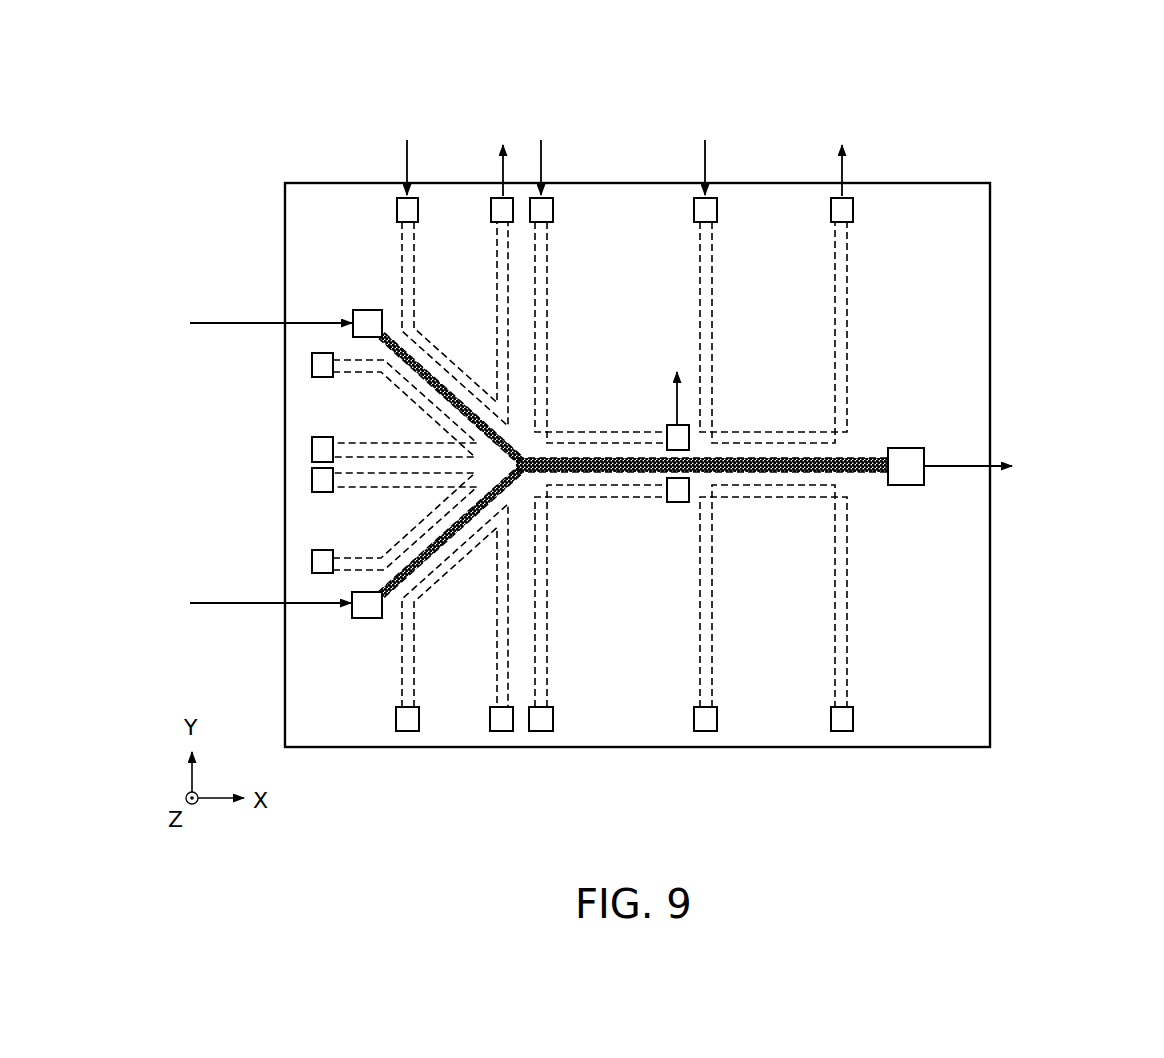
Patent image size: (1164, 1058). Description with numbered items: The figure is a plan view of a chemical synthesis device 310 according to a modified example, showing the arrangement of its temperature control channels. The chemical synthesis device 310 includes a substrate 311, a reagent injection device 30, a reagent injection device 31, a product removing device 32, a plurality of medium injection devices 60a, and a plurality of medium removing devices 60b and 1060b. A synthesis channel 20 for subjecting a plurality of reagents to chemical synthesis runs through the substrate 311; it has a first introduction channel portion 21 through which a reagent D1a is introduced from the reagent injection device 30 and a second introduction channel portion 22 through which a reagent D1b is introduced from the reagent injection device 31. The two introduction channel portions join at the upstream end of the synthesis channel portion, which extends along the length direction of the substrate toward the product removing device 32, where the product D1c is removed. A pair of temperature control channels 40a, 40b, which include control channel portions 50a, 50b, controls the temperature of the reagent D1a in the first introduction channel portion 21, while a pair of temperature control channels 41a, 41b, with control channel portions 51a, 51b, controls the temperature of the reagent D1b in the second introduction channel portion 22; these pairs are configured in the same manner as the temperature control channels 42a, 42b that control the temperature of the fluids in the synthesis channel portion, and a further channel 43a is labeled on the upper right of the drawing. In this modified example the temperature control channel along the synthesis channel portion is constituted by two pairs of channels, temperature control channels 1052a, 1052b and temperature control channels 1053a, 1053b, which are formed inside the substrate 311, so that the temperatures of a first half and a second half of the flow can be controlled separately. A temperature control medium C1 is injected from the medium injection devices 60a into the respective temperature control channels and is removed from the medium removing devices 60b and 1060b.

The chemical synthesis device 310 is at (1074, 121).
The substrate 311 is at (972, 181).
The synthesis channel 20 is at (798, 478).
The first introduction channel portion 21 is at (394, 338).
The second introduction channel portion 22 is at (398, 604).
The reagent injection device 30 is at (367, 322).
The reagent injection device 31 is at (367, 620).
The product removing device 32 is at (910, 458).
The temperature control channel 40a is at (395, 270).
The temperature control channel 40b is at (386, 379).
The temperature control channel 41a is at (397, 659).
The temperature control channel 41b is at (400, 537).
The temperature control channel 42a is at (549, 243).
The temperature control channel 42b is at (554, 686).
The cleaning channel 43a is at (714, 243).
The control channel portion 50a is at (465, 374).
The control channel portion 50b is at (445, 433).
The control channel portion 51a is at (466, 550).
The control channel portion 51b is at (445, 497).
The medium injection device 60a is at (400, 209).
The medium removing device 60b is at (498, 209).
The medium removing device 1060b is at (664, 426).
The temperature control channel 1052a is at (603, 432).
The temperature control channel 1052b is at (600, 497).
The temperature control channel 1053a is at (780, 432).
The temperature control channel 1053b is at (770, 497).
The reagent D1a is at (248, 327).
The reagent D1b is at (248, 607).
The product D1c is at (993, 472).
The temperature control medium C1 is at (625, 270).